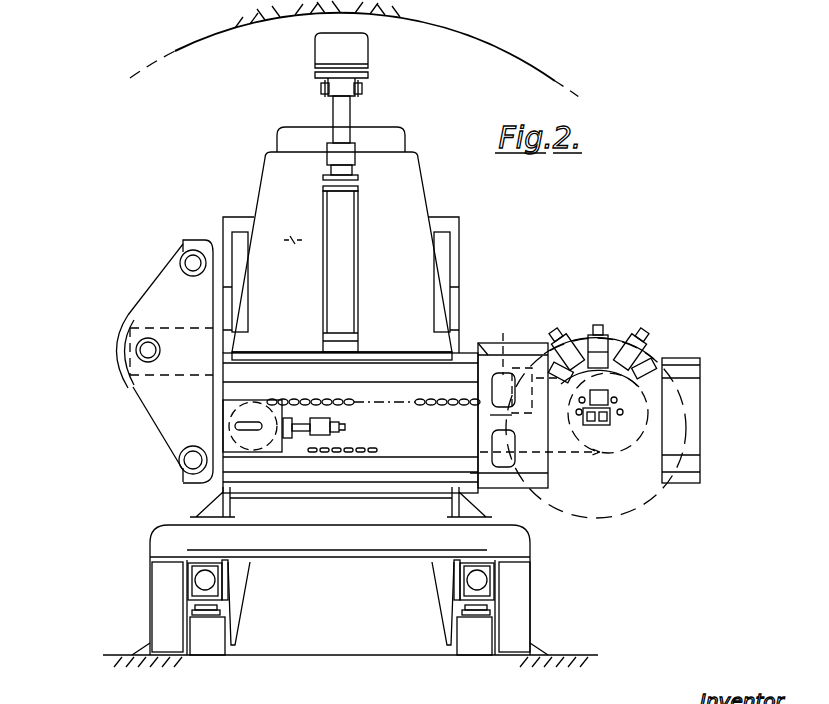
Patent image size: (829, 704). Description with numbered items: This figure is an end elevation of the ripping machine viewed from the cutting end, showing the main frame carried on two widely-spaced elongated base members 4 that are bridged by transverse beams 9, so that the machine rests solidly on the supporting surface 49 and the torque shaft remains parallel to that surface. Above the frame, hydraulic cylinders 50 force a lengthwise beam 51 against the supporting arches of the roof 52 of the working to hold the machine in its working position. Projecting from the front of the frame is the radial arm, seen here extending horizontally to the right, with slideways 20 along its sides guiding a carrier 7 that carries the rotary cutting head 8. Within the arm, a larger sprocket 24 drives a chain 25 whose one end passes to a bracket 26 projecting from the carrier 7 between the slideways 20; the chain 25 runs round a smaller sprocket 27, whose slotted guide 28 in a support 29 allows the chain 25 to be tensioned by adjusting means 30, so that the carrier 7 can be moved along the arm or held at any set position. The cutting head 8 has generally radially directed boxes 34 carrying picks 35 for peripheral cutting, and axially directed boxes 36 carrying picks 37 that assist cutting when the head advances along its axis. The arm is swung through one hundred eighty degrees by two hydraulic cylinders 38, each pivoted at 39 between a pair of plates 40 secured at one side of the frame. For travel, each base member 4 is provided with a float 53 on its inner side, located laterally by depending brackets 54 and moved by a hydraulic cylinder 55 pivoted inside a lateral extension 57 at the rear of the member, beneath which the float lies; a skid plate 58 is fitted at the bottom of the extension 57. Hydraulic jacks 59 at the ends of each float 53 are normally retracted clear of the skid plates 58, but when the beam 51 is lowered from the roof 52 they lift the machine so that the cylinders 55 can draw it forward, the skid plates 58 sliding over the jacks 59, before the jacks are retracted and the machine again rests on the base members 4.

The base member 4 is at (157, 604).
The carrier 7 is at (519, 352).
The rotary cutting head 8 is at (650, 350).
The transverse beam 9 is at (344, 540).
The slideway 20 is at (456, 373).
The larger sprocket 24 is at (634, 420).
The chain 25 is at (448, 404).
The bracket 26 is at (506, 344).
The smaller sprocket 27 is at (218, 410).
The slotted guide 28 is at (240, 430).
The support 29 is at (228, 424).
The adjusting means 30 is at (320, 432).
The radially directed box 34 is at (603, 345).
The pick 35 is at (592, 338).
The axially directed box 36 is at (612, 417).
The pick 37 is at (583, 425).
The hydraulic cylinder 38 is at (232, 336).
The pivot 39 is at (162, 328).
The plate 40 is at (166, 410).
The supporting surface 49 is at (113, 655).
The hydraulic cylinder 50 is at (348, 233).
The lengthwise beam 51 is at (368, 75).
The roof 52 is at (395, 22).
The float 53 is at (212, 640).
The depending bracket 54 is at (240, 598).
The hydraulic cylinder 55 is at (208, 578).
The lateral extension 57 is at (226, 586).
The skid plate 58 is at (190, 605).
The hydraulic jack 59 is at (220, 612).